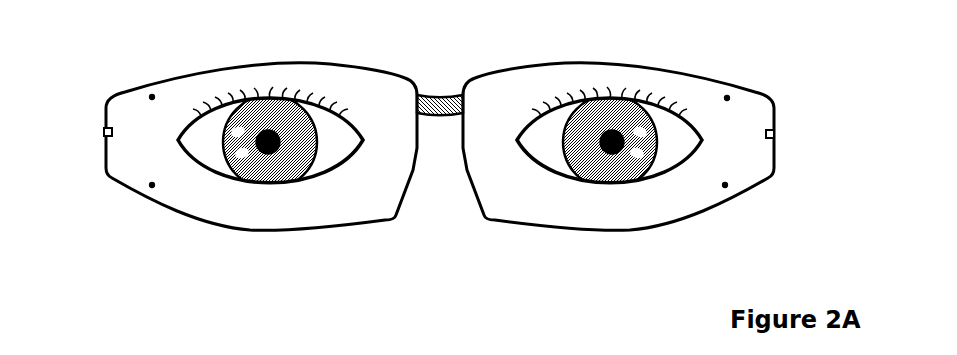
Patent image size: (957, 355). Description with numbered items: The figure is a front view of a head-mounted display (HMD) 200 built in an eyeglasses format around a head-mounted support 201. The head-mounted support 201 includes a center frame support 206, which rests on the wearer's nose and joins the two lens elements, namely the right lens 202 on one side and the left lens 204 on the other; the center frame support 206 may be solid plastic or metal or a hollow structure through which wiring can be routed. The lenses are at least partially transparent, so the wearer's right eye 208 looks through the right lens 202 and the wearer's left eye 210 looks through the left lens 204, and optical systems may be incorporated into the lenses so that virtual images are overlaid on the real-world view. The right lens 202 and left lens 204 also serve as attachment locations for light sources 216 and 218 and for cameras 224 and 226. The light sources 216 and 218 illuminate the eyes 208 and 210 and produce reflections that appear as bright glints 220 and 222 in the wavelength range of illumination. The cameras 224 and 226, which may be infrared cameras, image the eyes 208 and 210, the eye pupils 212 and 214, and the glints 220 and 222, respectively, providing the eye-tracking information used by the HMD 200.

The head-mounted display 200 is at (425, 145).
The head-mounted support 201 is at (440, 145).
The right lens 202 is at (267, 229).
The left lens 204 is at (594, 230).
The center frame support 206 is at (430, 95).
The right eye 208 is at (273, 149).
The left eye 210 is at (598, 151).
The eye pupil 212 is at (248, 153).
The eye pupil 214 is at (633, 155).
The light source 216 is at (150, 183).
The light source 218 is at (726, 183).
The glint 220 is at (240, 153).
The glint 222 is at (642, 155).
The camera 224 is at (102, 131).
The camera 226 is at (773, 132).